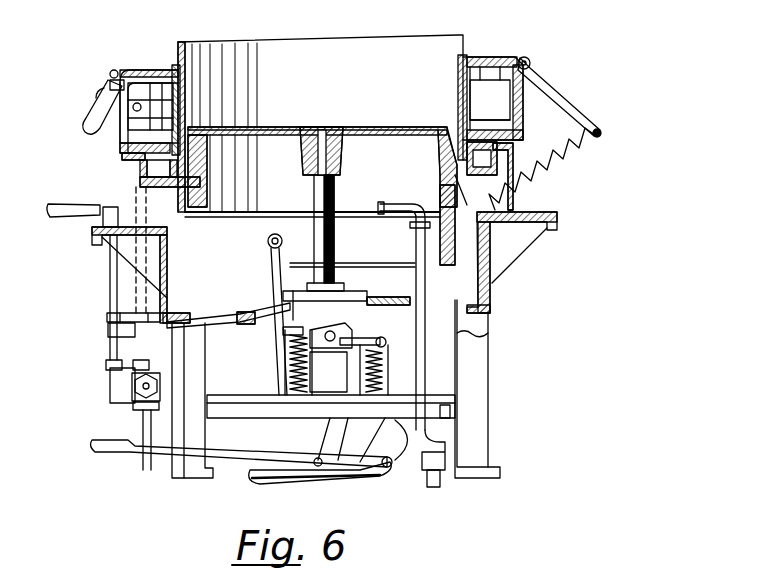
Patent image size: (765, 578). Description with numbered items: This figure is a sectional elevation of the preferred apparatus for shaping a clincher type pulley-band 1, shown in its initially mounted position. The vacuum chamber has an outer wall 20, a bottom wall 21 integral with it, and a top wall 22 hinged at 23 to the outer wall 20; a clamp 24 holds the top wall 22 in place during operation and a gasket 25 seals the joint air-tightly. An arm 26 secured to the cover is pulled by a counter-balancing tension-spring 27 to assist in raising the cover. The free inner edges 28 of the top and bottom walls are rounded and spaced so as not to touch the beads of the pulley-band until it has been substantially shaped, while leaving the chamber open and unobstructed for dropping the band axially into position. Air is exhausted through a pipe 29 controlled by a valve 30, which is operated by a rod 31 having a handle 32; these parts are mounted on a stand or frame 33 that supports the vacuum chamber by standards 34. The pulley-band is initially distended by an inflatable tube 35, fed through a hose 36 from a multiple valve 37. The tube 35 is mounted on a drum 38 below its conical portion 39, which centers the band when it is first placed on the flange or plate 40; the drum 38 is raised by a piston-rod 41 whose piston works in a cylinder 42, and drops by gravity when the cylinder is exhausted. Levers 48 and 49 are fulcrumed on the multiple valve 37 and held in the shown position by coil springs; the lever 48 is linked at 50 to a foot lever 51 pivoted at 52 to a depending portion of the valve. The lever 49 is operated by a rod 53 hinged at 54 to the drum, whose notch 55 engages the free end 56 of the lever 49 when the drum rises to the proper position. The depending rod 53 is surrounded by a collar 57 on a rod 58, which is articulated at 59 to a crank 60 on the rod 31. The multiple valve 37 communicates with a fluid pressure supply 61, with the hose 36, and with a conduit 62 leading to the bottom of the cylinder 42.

The clincher type pulley-band 1 is at (462, 46).
The outer wall 20 is at (122, 132).
The bottom wall 21 is at (123, 158).
The top wall 22 is at (161, 70).
The hinge 23 is at (528, 58).
The clamp 24 is at (92, 108).
The gasket 25 is at (118, 70).
The arm 26 is at (572, 106).
The counter-balancing tension-spring 27 is at (574, 152).
The free inner edges 28 is at (480, 118).
The pipe 29 is at (138, 196).
The valve 30 is at (112, 388).
The rod 31 is at (110, 285).
The handle 32 is at (60, 216).
The stand or frame 33 is at (103, 245).
The standards 34 is at (514, 171).
The tube 35 is at (460, 203).
The hose 36 is at (426, 301).
The multiple valve 37 is at (328, 372).
The drum 38 is at (378, 127).
The conical portion 39 is at (446, 124).
The flange or plate 40 is at (176, 186).
The piston-rod 41 is at (333, 258).
The cylinder 42 is at (340, 300).
The lever 48 is at (376, 338).
The lever 49 is at (314, 333).
The link 50 is at (386, 345).
The foot lever 51 is at (236, 457).
The pivot 52 is at (346, 474).
The rod 53 is at (284, 290).
The hinge 54 is at (283, 241).
The notch 55 is at (290, 434).
The free end 56 is at (288, 341).
The collar 57 is at (294, 300).
The rod 58 is at (241, 321).
The articulation 59 is at (120, 315).
The crank 60 is at (116, 333).
The source of fluid pressure supply 61 is at (434, 488).
The conduit 62 is at (318, 476).